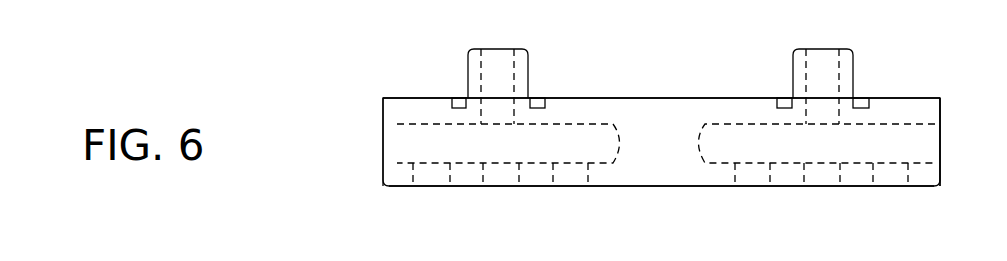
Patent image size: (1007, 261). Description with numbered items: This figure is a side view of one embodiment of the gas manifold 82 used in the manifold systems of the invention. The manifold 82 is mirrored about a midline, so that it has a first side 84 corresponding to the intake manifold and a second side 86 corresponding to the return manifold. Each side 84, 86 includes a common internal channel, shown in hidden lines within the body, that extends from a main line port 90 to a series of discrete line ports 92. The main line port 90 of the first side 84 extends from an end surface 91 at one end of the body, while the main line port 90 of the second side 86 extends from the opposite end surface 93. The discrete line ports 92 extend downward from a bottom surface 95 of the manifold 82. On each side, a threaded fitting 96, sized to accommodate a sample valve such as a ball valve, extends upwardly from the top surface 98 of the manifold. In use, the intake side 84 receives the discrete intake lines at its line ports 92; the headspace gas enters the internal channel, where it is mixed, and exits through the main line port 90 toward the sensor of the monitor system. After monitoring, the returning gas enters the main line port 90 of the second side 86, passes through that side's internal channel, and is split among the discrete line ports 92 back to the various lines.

The gas manifold 82 is at (657, 112).
The first side 84 is at (374, 69).
The second side 86 is at (932, 84).
The main line port 90 is at (383, 132).
The end surface 91 is at (383, 172).
The discrete line ports 92 is at (427, 179).
The end surface 93 is at (940, 110).
The bottom surface 95 is at (675, 186).
The threaded fitting 96 is at (528, 75).
The top surface 98 is at (713, 97).